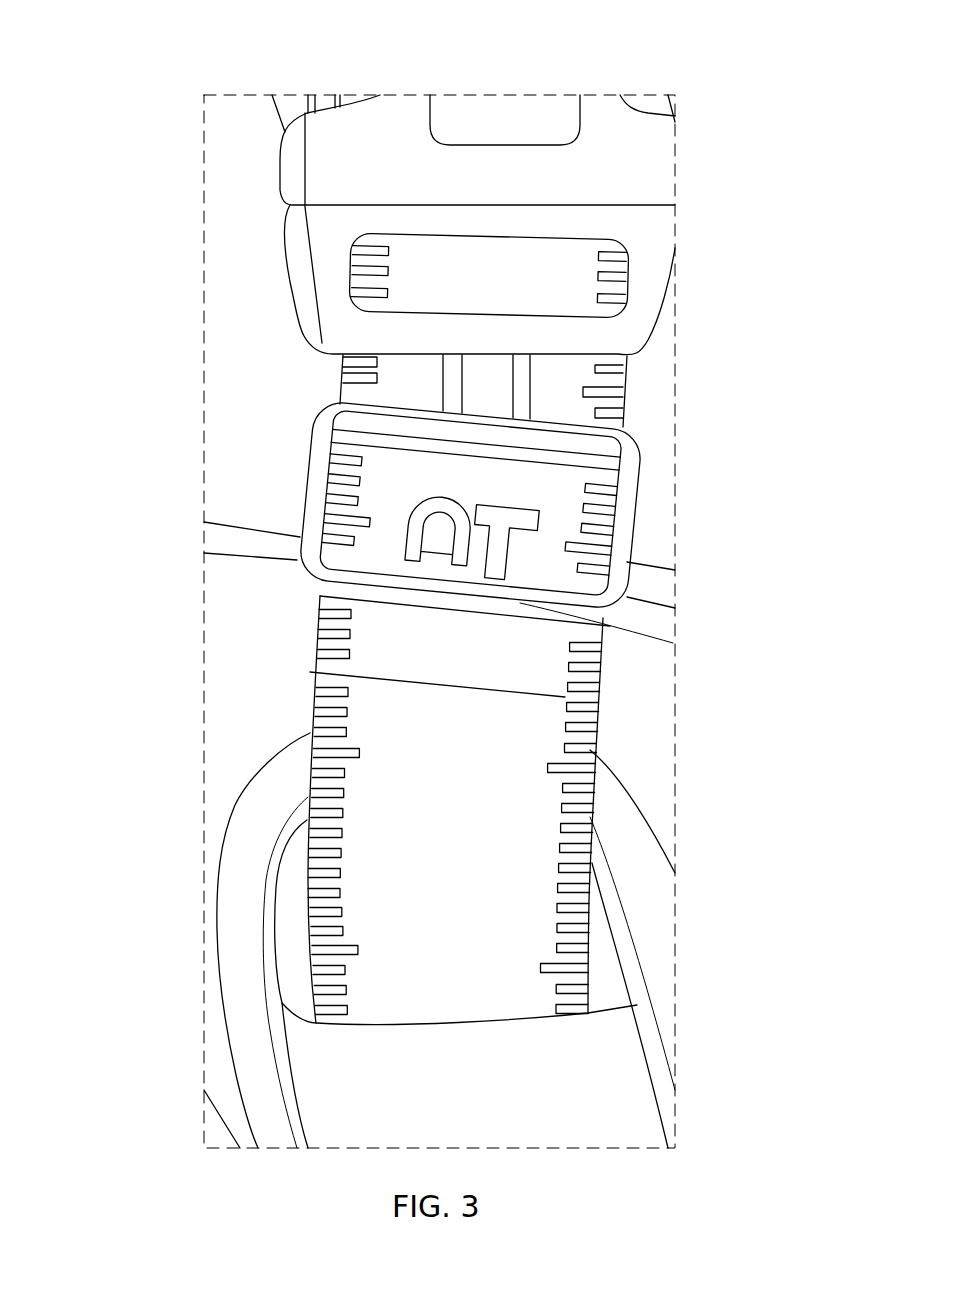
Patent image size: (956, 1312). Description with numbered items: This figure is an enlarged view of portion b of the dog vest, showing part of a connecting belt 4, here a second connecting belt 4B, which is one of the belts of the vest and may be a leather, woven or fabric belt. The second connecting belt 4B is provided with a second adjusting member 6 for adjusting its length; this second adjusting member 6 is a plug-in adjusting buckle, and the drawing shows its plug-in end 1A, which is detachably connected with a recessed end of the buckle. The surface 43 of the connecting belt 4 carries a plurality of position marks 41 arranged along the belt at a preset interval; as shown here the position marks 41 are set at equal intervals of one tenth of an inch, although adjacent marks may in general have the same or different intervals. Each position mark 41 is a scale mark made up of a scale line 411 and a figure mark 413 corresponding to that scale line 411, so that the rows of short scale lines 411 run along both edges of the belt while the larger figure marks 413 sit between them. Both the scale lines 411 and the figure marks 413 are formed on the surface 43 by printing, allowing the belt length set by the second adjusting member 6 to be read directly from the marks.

The plug-in end 1A is at (320, 276).
The connecting belt 4 is at (449, 700).
The second connecting belt 4B is at (449, 700).
The second adjusting member 6 is at (633, 470).
The position mark 41 is at (564, 828).
The scale line 411 is at (573, 847).
The figure mark 413 is at (480, 767).
The surface 43 is at (383, 732).
The portion b is at (487, 32).